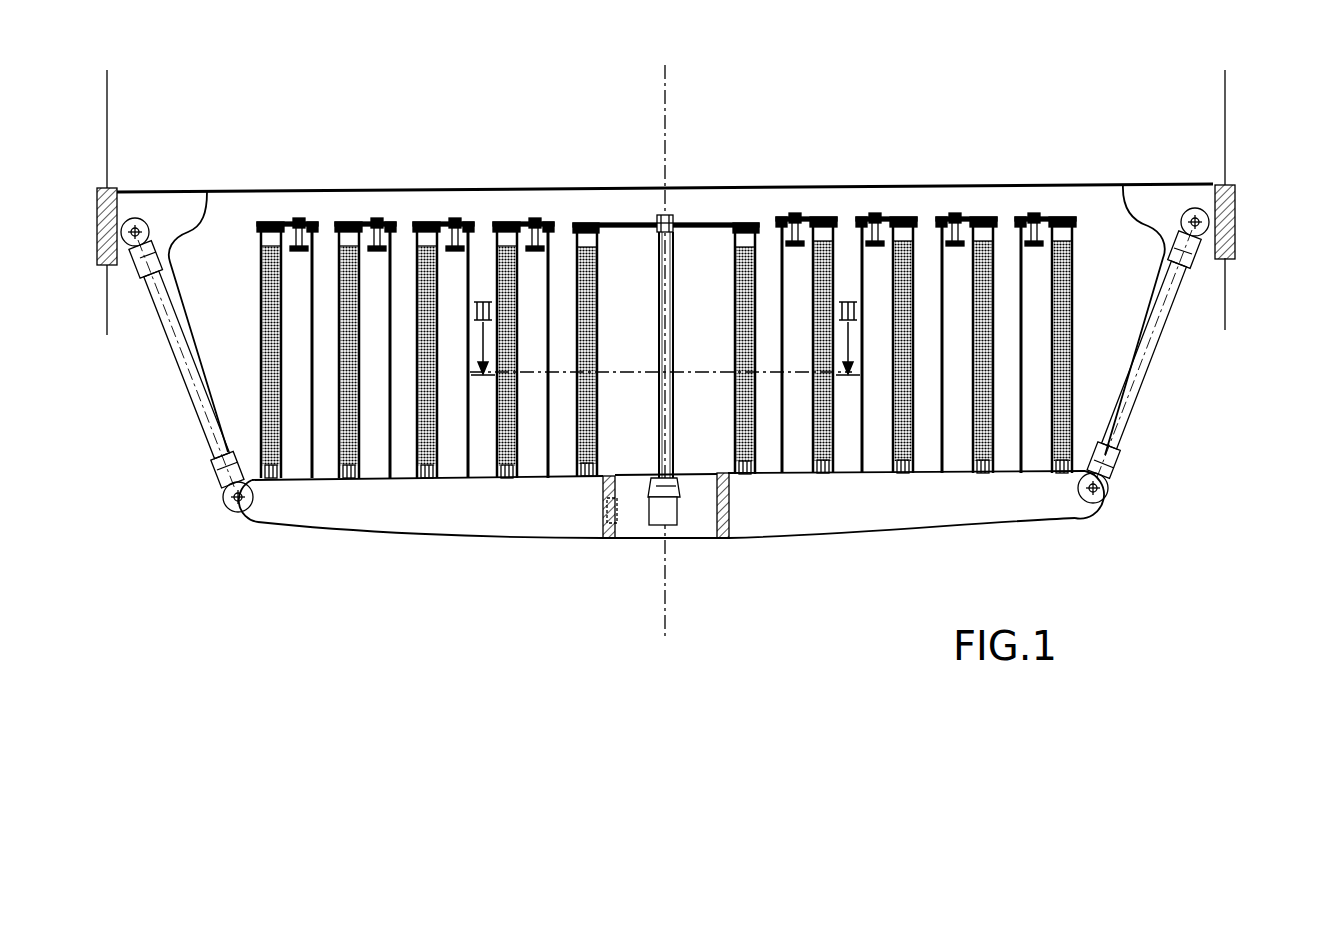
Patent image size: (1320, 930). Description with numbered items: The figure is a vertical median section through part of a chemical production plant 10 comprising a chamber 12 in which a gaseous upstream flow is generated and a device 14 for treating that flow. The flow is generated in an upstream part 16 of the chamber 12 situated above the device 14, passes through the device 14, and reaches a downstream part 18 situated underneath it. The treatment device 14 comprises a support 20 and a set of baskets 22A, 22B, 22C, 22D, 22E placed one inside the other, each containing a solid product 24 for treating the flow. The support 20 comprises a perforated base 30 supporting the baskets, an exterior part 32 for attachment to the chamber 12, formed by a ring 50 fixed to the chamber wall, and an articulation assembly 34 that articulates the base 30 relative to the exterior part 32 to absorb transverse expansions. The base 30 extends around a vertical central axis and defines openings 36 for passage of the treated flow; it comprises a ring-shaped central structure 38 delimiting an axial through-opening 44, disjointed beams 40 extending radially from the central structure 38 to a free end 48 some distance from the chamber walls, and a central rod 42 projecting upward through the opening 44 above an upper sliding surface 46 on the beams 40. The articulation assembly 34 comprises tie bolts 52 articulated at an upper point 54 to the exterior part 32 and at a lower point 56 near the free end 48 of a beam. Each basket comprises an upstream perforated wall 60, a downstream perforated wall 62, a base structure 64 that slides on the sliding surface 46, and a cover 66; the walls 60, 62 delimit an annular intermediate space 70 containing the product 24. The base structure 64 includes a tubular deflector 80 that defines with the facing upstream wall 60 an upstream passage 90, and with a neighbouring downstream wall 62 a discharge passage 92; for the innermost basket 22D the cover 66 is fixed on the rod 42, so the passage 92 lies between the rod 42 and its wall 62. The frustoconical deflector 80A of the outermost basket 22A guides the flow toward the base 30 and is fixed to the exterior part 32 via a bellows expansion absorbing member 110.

The chemical production plant 10 is at (1303, 398).
The chamber 12 is at (1226, 294).
The treatment device 14 is at (1096, 146).
The upstream part 16 is at (762, 122).
The downstream part 18 is at (789, 590).
The support 20 is at (248, 620).
The basket 22A is at (508, 289).
The basket 22B is at (475, 350).
The basket 22C is at (449, 197).
The basket 22D is at (645, 314).
The basket 22E is at (505, 351).
The solid product 24 is at (599, 325).
The perforated base 30 is at (542, 552).
The exterior part 32 is at (86, 292).
The articulation assembly 34 is at (176, 430).
The openings 36 is at (665, 537).
The central structure 38 is at (713, 540).
The beams 40 is at (490, 525).
The central rod 42 is at (675, 255).
The axial through-opening 44 is at (666, 537).
The sliding surface 46 is at (528, 478).
The free end 48 is at (252, 522).
The ring 50 is at (95, 212).
The tie bolt 52 is at (188, 362).
The upper articulation point 54 is at (133, 216).
The lower articulation point 56 is at (224, 506).
The upstream perforated wall 60 is at (338, 455).
The downstream perforated wall 62 is at (598, 243).
The base structure 64 is at (305, 490).
The cover 66 is at (355, 220).
The intermediate space 70 is at (332, 228).
The tubular deflector 80 is at (311, 320).
The deflector 80A is at (188, 302).
The upstream passage 90 is at (310, 397).
The discharge passage 92 is at (366, 312).
The expansion absorbing member 110 is at (207, 190).